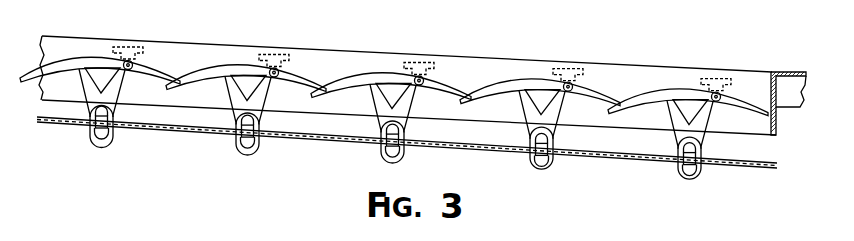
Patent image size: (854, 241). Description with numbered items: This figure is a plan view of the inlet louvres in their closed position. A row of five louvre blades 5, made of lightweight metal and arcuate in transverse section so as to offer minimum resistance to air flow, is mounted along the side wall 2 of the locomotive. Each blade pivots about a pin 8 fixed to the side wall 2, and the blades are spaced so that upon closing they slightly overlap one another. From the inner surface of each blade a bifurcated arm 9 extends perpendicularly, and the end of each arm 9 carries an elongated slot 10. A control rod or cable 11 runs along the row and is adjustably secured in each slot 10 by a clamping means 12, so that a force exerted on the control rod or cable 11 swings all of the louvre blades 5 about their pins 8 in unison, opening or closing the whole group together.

The side wall 2 is at (475, 57).
The louvre blades 5 is at (246, 50).
The pins 8 is at (298, 63).
The bifurcated arms 9 is at (265, 116).
The elongated slots 10 is at (266, 141).
The control rods or cables 11 is at (333, 141).
The clamping means 12 is at (281, 125).